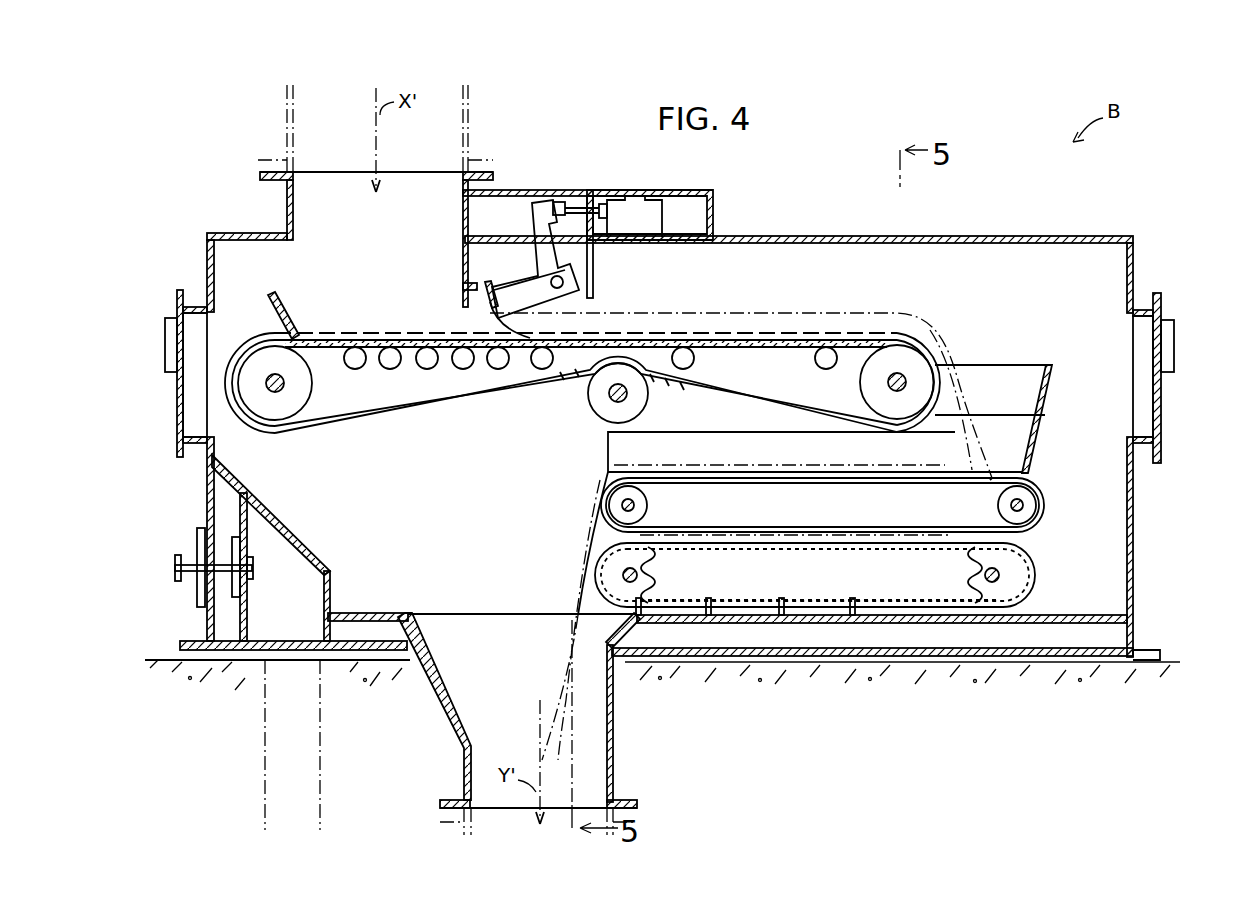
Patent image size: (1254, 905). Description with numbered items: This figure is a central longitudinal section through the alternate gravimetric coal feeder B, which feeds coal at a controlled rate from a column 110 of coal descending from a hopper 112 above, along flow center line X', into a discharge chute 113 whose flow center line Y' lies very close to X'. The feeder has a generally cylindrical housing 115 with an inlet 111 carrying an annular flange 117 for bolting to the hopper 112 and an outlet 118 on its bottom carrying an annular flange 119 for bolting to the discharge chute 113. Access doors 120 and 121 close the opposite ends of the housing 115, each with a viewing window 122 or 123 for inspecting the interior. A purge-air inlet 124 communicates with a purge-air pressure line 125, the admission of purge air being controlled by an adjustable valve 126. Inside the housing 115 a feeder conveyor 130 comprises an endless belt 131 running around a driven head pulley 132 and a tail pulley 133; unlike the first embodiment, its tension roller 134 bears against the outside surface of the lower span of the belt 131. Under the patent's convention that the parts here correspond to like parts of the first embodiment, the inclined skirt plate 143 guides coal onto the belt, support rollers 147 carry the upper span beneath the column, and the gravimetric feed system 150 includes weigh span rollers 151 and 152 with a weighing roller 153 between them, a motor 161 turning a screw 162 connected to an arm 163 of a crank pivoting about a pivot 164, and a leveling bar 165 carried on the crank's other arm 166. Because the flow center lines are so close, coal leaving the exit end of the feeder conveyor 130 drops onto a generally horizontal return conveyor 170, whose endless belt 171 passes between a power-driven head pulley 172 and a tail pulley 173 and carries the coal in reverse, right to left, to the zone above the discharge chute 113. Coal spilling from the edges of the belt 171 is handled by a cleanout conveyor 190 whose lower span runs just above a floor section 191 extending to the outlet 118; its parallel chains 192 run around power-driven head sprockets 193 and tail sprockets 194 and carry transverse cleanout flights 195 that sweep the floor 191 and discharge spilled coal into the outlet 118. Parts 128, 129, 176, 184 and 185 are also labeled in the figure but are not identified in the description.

The column of coal 110 is at (325, 206).
The inlet 111 is at (292, 228).
The hopper 112 is at (470, 103).
The discharge chute 113 is at (462, 830).
The housing 115 is at (1073, 238).
The annular flange 117 is at (270, 178).
The outlet 118 is at (612, 728).
The annular flange 119 is at (620, 800).
The access door 120 is at (177, 405).
The access door 121 is at (1160, 414).
The viewing window 122 is at (165, 352).
The viewing window 123 is at (1165, 348).
The purge-air inlet 124 is at (270, 640).
The purge-air pressure line 125 is at (266, 700).
The adjustable valve 126 is at (190, 566).
The conveyor belt 128 is at (597, 375).
The belt end loop 129 is at (252, 325).
The feeder conveyor 130 is at (682, 430).
The endless belt 131 is at (374, 338).
The head pulley 132 is at (918, 348).
The tail pulley 133 is at (285, 405).
The tension roller 134 is at (602, 410).
The inclined skirt plate 143 is at (274, 298).
The support rollers 147 is at (388, 362).
The gravimetric feed system 150 is at (559, 246).
The weigh span roller 151 is at (540, 368).
The weigh span roller 152 is at (826, 366).
The weighing roller 153 is at (690, 358).
The electric motor 161 is at (634, 236).
The screw 162 is at (586, 206).
The arm 163 is at (540, 243).
The pivot 164 is at (564, 282).
The leveling bar 165 is at (470, 298).
The arm 166 is at (518, 282).
The return conveyor 170 is at (851, 507).
The endless belt 171 is at (1042, 498).
The head pulley 172 is at (1002, 510).
The tail pulley 173 is at (640, 506).
The discharge path 176 is at (992, 478).
The discharge chute 184 is at (1015, 378).
The chute wall 185 is at (1048, 402).
The cleanout conveyor 190 is at (848, 579).
The floor section 191 is at (1048, 618).
The chains 192 is at (700, 608).
The head sprockets 193 is at (660, 566).
The tail sprockets 194 is at (968, 575).
The cleanout flights 195 is at (850, 598).